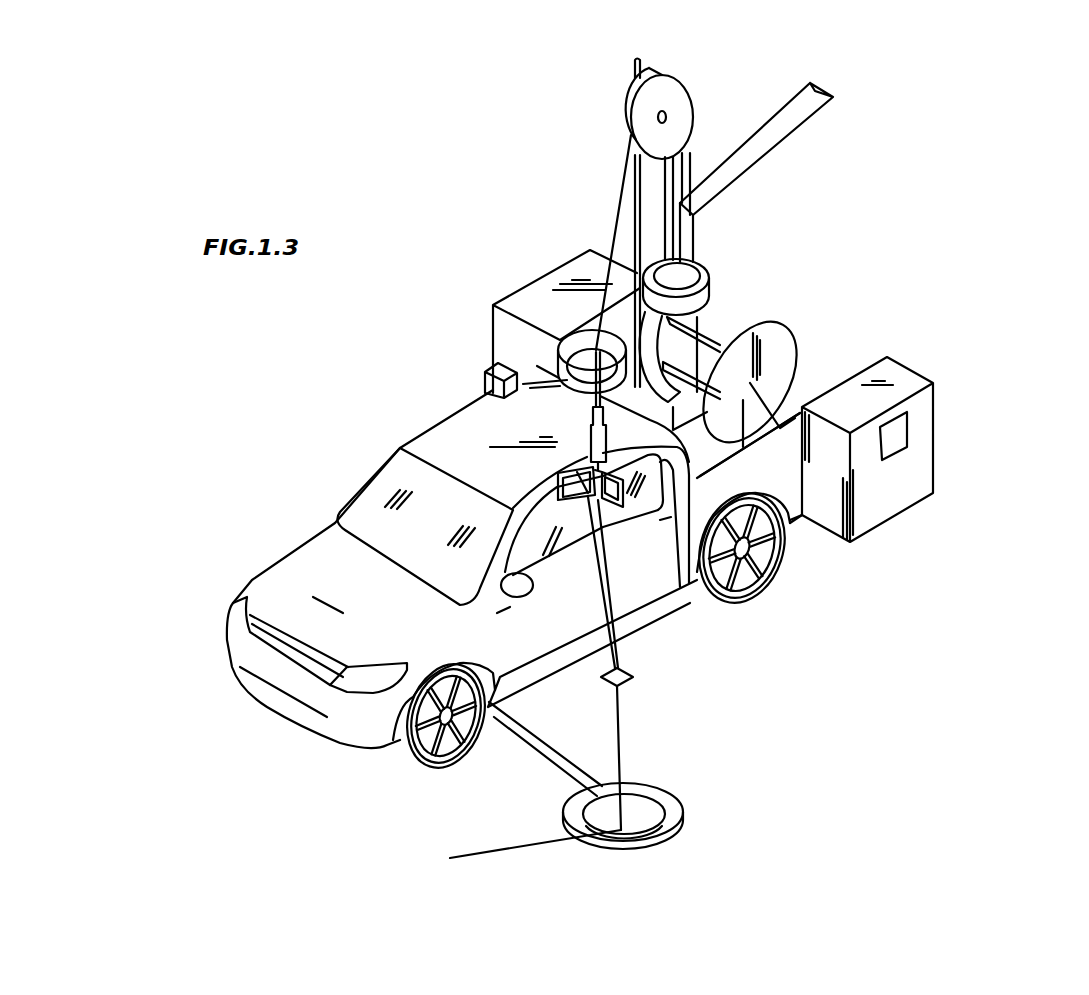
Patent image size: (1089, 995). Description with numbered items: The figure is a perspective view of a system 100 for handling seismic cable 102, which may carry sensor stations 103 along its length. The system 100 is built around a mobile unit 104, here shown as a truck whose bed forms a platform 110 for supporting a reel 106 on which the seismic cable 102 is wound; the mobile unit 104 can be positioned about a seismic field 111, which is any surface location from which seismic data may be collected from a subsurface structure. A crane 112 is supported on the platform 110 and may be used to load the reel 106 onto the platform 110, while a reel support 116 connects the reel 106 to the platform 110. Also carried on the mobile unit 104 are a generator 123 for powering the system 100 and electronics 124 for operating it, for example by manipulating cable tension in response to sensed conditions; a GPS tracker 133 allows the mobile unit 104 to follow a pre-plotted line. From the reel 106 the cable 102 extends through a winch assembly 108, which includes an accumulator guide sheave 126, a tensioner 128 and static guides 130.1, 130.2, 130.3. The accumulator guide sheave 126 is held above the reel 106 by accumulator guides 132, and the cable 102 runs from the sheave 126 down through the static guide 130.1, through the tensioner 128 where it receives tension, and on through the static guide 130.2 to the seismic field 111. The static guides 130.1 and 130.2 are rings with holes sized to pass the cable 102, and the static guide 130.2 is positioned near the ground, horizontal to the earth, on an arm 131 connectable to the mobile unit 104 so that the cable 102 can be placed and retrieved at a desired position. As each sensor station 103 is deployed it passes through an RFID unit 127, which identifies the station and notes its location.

The system 100 is at (985, 292).
The seismic cable 102 is at (622, 723).
The sensor station 103 is at (633, 676).
The mobile unit 104 is at (260, 570).
The reel 106 is at (770, 340).
The winch assembly 108 is at (603, 203).
The platform 110 is at (802, 397).
The seismic field 111 is at (760, 820).
The crane 112 is at (803, 128).
The reel support 116 is at (743, 393).
The generator 123 is at (517, 293).
The electronics 124 is at (920, 458).
The accumulator guide sheave 126 is at (658, 74).
The RFID unit 127 is at (562, 486).
The tensioner 128 is at (590, 437).
The static guide 130.1 is at (575, 344).
The static guide 130.2 is at (570, 807).
The static guide 130.3 is at (727, 258).
The arm 131 is at (553, 762).
The accumulator guides 132 is at (633, 65).
The GPS tracker 133 is at (907, 430).